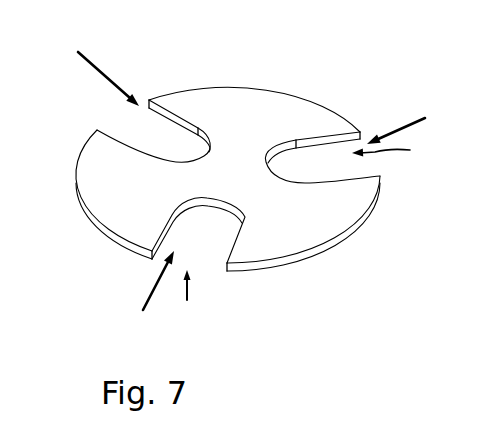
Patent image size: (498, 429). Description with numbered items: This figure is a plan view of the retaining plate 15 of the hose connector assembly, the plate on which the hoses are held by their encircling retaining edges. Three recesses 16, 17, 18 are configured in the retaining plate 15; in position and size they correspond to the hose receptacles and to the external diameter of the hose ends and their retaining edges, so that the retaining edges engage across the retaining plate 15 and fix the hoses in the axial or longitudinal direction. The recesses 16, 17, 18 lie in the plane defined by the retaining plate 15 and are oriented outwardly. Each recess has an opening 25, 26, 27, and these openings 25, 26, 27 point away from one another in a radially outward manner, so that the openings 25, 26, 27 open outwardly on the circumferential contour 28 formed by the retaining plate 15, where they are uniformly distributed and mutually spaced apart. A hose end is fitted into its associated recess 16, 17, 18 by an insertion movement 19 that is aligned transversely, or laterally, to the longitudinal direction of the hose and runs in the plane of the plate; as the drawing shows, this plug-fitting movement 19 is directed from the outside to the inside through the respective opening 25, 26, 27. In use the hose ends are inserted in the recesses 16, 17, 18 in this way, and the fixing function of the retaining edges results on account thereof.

The retaining plate 15 is at (237, 173).
The recess 16 is at (212, 252).
The recess 17 is at (317, 172).
The recess 18 is at (170, 145).
The insertion movement 19 is at (107, 78).
The opening 25 is at (187, 298).
The opening 26 is at (394, 150).
The opening 27 is at (97, 107).
The circumferential contour 28 is at (275, 258).